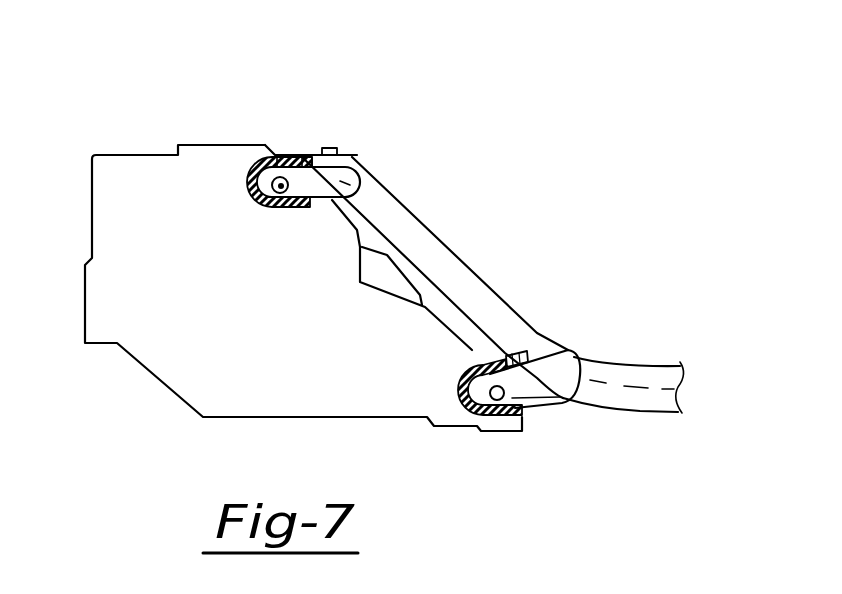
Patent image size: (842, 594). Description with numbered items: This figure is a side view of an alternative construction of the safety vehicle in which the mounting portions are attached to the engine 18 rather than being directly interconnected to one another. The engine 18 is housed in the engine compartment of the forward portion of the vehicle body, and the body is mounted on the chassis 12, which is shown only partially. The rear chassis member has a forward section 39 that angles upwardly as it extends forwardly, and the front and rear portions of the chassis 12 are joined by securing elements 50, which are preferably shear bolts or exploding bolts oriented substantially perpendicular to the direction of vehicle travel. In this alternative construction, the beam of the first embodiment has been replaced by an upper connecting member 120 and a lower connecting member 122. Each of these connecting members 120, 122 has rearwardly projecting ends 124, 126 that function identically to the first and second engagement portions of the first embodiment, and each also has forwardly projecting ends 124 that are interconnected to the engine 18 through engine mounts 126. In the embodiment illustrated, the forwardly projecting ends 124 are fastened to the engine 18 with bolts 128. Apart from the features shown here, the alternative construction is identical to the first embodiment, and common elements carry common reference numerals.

The chassis 12 is at (654, 420).
The engine 18 is at (166, 392).
The forward section 39 is at (418, 212).
The shear bolts 50 is at (328, 148).
The upper connecting member 120 is at (315, 208).
The lower connecting member 122 is at (570, 417).
The projecting ends 124 is at (268, 143).
The engine mounts 126 is at (246, 186).
The bolts 128 is at (257, 207).